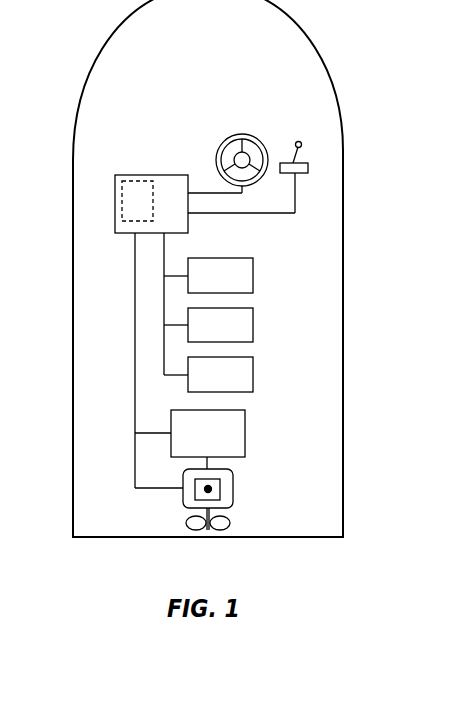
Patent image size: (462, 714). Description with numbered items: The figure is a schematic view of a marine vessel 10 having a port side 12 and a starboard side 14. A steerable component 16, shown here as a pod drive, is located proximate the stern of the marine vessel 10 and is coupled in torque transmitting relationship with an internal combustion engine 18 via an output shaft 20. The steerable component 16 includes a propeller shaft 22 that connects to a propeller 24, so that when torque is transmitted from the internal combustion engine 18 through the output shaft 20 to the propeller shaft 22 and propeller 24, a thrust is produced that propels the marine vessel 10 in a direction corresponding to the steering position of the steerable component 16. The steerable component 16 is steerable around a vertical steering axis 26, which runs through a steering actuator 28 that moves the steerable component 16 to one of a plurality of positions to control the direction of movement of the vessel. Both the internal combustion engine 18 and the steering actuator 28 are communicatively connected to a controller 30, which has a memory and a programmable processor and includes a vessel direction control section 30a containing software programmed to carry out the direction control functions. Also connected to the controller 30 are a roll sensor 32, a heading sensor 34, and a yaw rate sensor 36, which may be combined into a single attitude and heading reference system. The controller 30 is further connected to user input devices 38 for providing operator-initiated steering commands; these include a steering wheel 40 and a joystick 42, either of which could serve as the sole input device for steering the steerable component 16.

The marine vessel 10 is at (343, 172).
The port side 12 is at (70, 273).
The starboard side 14 is at (346, 244).
The steerable component 16 is at (233, 484).
The internal combustion engine 18 is at (245, 426).
The output shaft 20 is at (212, 462).
The propeller shaft 22 is at (236, 513).
The propeller 24 is at (232, 523).
The vertical steering axis 26 is at (205, 496).
The steering actuator 28 is at (222, 490).
The controller 30 is at (163, 175).
The vessel direction control section 30a is at (115, 199).
The roll sensor 32 is at (253, 276).
The heading sensor 34 is at (253, 326).
The yaw rate sensor 36 is at (253, 375).
The user input devices 38 is at (286, 95).
The steering wheel 40 is at (234, 135).
The joystick 42 is at (304, 158).